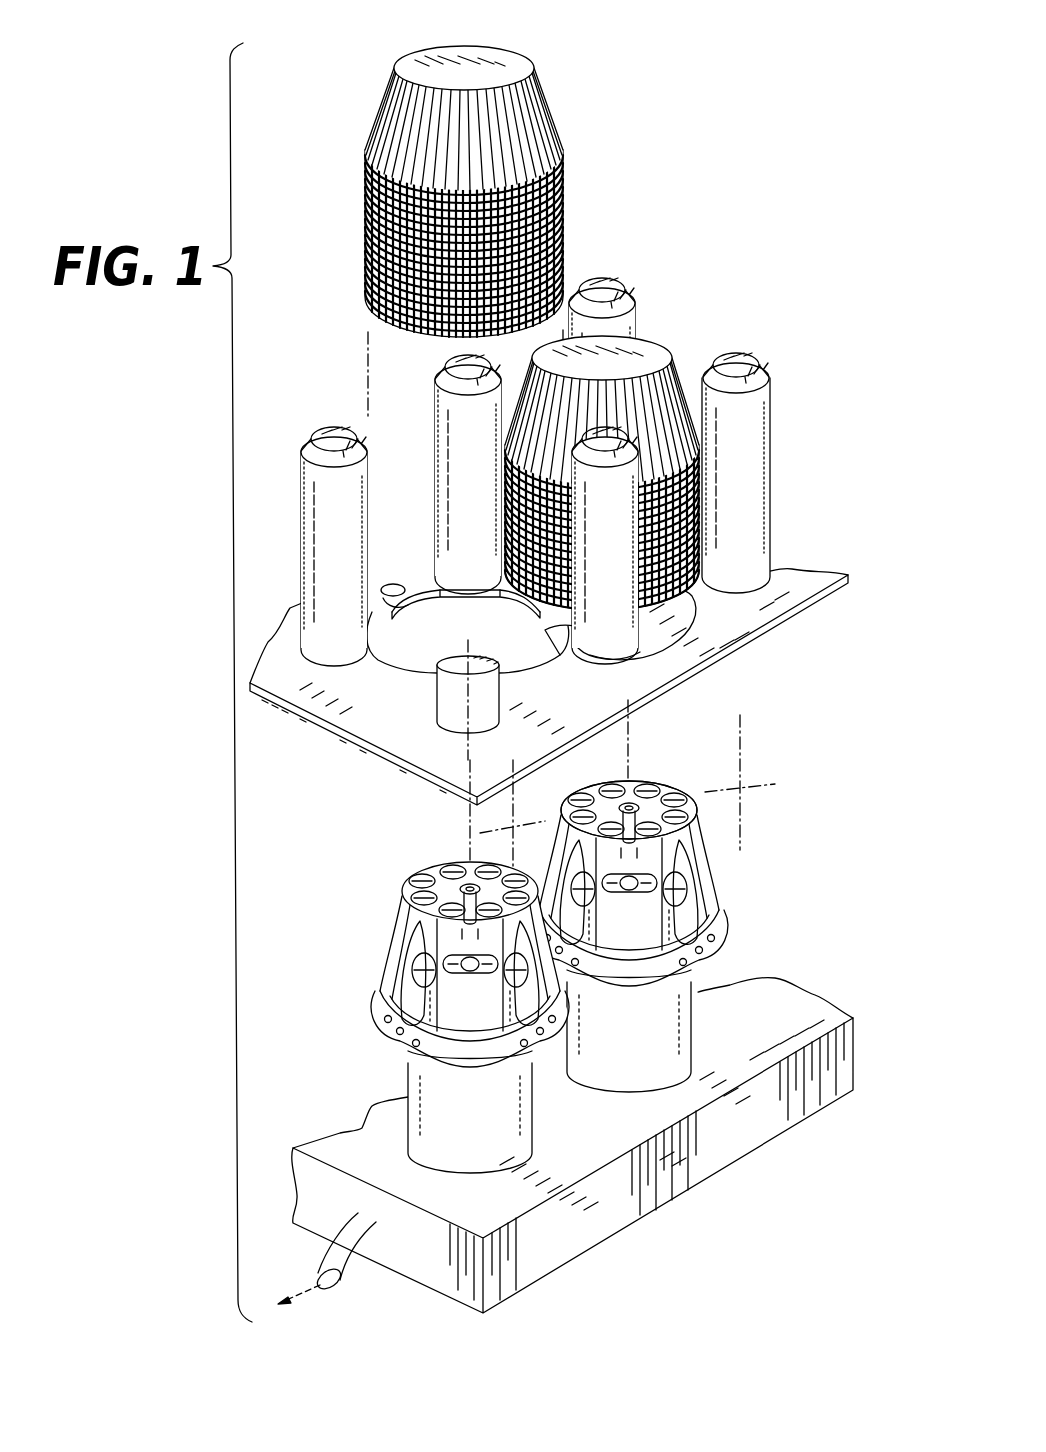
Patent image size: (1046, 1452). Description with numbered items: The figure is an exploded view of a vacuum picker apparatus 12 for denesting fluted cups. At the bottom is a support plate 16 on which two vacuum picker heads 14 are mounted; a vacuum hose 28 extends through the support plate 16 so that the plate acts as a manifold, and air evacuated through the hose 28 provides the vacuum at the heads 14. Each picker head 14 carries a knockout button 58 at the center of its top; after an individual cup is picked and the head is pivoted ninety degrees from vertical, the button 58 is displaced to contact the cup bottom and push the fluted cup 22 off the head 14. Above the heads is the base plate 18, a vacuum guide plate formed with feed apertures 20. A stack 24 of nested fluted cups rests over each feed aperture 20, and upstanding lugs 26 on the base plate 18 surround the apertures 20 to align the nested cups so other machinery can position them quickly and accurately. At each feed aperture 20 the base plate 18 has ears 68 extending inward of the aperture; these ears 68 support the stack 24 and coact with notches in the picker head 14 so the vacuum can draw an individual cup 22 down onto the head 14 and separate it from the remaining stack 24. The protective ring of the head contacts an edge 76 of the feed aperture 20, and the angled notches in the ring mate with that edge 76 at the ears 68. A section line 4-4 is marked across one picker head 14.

The section line 4- 4 is at (741, 794).
The vacuum picker apparatus 12 is at (877, 550).
The vacuum picker head 14 is at (549, 986).
The support plate 16 is at (750, 1148).
The base plate 18 is at (318, 733).
The feed aperture 20 is at (395, 652).
The fluted cup 22 is at (546, 357).
The stack of nested fluted cups 24 is at (364, 213).
The lug 26 is at (312, 485).
The vacuum hose 28 is at (355, 1270).
The knockout button 58 is at (666, 798).
The ear 68 is at (410, 600).
The edge 76 is at (442, 655).